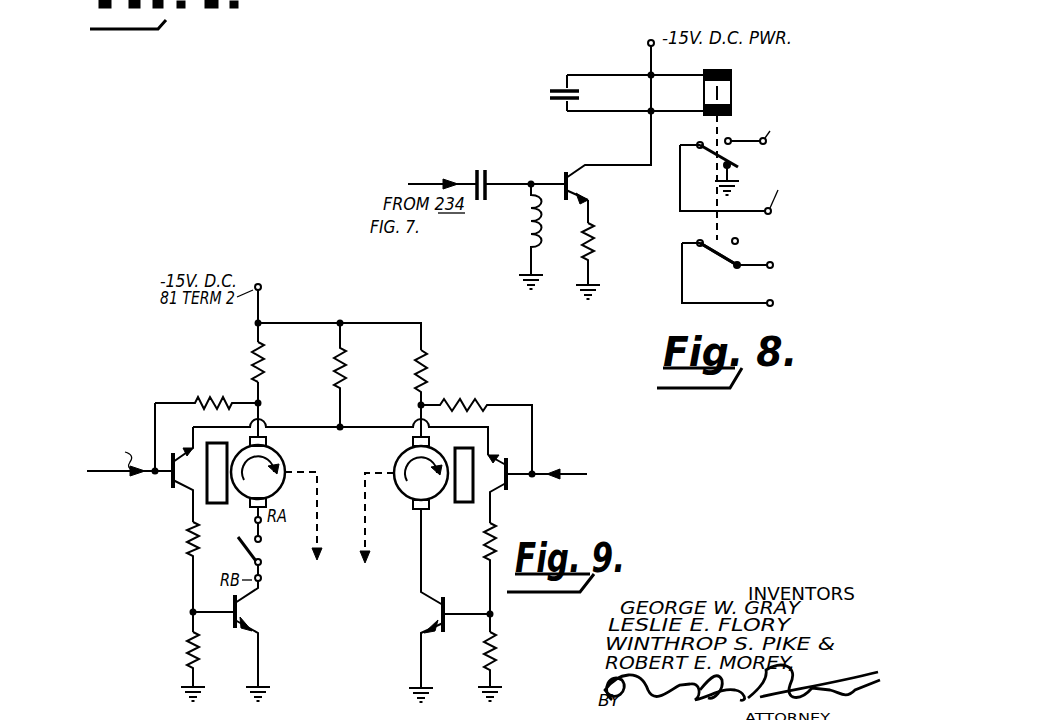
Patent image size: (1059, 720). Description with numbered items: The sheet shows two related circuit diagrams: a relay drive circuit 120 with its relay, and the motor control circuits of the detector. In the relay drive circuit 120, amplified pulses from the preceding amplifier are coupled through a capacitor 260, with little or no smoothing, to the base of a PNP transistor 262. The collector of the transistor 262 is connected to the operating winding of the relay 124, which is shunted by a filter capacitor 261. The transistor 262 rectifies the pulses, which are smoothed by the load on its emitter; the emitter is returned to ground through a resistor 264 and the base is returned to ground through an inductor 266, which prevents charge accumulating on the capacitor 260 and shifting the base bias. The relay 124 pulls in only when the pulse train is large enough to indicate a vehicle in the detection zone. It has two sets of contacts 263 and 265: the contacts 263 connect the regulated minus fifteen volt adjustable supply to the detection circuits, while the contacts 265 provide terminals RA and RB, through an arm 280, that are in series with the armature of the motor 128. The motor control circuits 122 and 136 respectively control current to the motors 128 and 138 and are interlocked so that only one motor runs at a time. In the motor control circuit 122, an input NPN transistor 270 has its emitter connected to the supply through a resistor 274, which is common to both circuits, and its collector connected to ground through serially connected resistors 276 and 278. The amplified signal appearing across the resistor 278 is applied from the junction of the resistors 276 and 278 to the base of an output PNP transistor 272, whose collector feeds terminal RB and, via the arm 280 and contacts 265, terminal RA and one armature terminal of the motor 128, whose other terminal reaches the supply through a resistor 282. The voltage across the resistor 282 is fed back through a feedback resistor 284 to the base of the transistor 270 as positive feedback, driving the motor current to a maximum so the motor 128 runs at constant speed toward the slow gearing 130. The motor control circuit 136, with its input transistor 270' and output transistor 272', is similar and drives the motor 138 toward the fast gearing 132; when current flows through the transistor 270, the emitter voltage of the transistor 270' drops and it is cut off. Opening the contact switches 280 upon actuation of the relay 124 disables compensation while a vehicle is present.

In FIG. 8, the relay drive circuit 120 is at (552, 171).
In FIG. 9, the motor control circuit 122 is at (152, 413).
In FIG. 8, the relay 124 is at (776, 102).
In FIG. 9, the motor 128 is at (280, 457).
In FIG. 9, the slow gearing 130 is at (301, 555).
In FIG. 9, the fast gearing 132 is at (386, 556).
In FIG. 9, the motor control circuit 136 is at (430, 398).
In FIG. 9, the motor 138 is at (405, 463).
In FIG. 8, the capacitor 260 is at (480, 170).
In FIG. 8, the filter capacitor 261 is at (558, 82).
In FIG. 8, the PNP transistor 262 is at (568, 183).
In FIG. 8, the relay contacts 263 is at (722, 147).
In FIG. 8, the resistor 264 is at (598, 241).
In FIG. 8, the relay contacts 265 is at (739, 240).
In FIG. 8, the inductor 266 is at (522, 226).
In FIG. 9, the input NPN transistor 270 is at (156, 474).
In FIG. 9, the input transistor 270' is at (542, 525).
In FIG. 9, the output PNP transistor 272 is at (231, 641).
In FIG. 9, the transistor 272' is at (455, 606).
In FIG. 9, the resistor 274 is at (333, 357).
In FIG. 9, the resistor 276 is at (188, 545).
In FIG. 9, the resistor 278 is at (183, 653).
In FIG. 8, the arm 280 is at (728, 264).
In FIG. 9, the arm 280 is at (246, 549).
In FIG. 9, the resistor 282 is at (250, 350).
In FIG. 9, the feedback resistor 284 is at (223, 394).